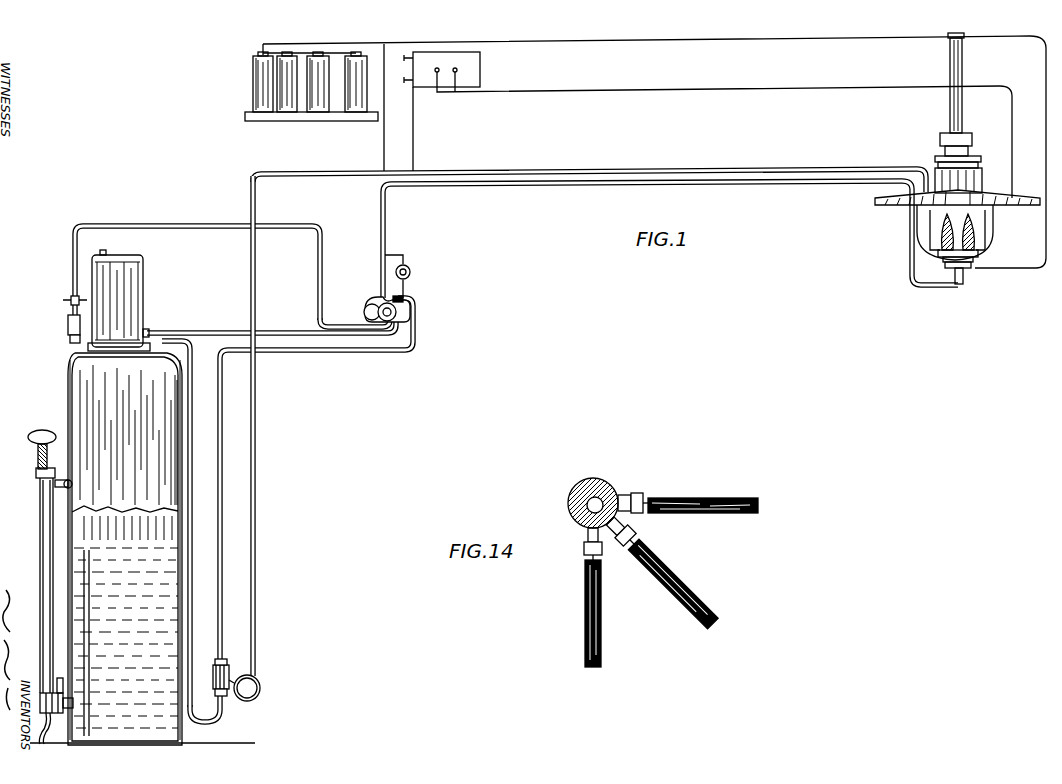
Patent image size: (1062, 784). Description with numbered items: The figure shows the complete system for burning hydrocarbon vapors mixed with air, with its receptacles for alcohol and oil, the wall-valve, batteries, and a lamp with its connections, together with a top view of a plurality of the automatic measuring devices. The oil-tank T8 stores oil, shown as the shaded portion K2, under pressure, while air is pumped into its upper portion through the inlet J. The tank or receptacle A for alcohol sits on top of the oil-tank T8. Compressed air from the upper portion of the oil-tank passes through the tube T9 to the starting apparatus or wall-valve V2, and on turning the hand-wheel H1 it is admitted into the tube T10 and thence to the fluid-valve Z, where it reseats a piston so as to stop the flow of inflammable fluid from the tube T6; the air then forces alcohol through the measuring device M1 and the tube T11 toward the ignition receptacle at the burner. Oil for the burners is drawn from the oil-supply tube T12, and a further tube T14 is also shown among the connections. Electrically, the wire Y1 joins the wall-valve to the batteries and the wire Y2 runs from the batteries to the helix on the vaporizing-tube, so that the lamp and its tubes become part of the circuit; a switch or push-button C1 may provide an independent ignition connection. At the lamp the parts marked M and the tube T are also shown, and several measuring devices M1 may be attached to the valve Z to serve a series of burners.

In FIG. 1, the wire Y2 is at (645, 142).
In FIG. 1, the wire Y1 is at (383, 141).
In FIG. 1, the air pipe to generator T14 is at (128, 229).
In FIG. 1, the tube T9 is at (266, 339).
In FIG. 1, the tube T6 is at (185, 334).
In FIG. 1, the oil-tank T8 is at (183, 597).
In FIG. 1, the tube T10 is at (223, 498).
In FIG. 1, the oil-supply tube T12 is at (378, 243).
In FIG. 1, the tube T11 is at (589, 412).
In FIG. 1, the tank or receptacle A is at (145, 300).
In FIG. 1, the oil K2 is at (142, 549).
In FIG. 1, the inlet J is at (40, 745).
In FIG. 1, the mantle / coil M is at (1001, 234).
In FIG. 1, the switch or push-button C1 is at (412, 270).
In FIG. 1, the wall-valve V2 is at (398, 315).
In FIG. 1, the hand-wheel H1 is at (393, 319).
In FIG. 1, the lamp supply pipe T is at (966, 276).
In FIG. 14, the measuring device M1 is at (671, 580).
In FIG. 14, the fluid-valve Z is at (597, 497).